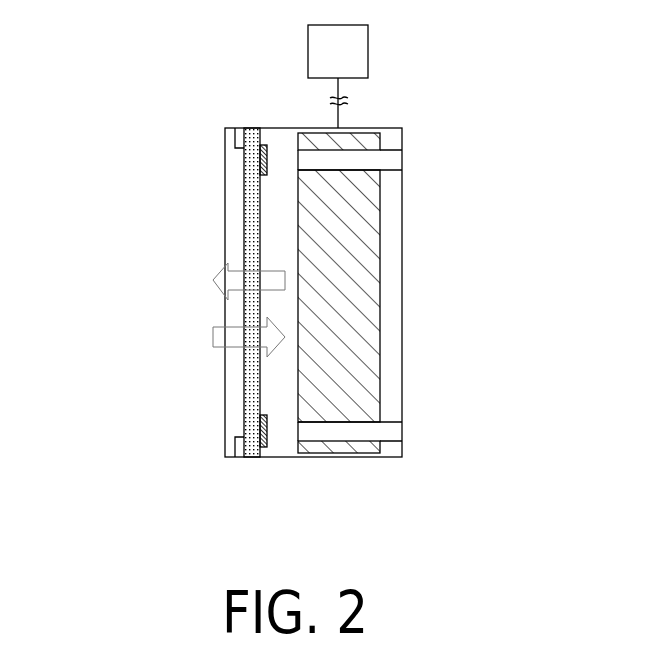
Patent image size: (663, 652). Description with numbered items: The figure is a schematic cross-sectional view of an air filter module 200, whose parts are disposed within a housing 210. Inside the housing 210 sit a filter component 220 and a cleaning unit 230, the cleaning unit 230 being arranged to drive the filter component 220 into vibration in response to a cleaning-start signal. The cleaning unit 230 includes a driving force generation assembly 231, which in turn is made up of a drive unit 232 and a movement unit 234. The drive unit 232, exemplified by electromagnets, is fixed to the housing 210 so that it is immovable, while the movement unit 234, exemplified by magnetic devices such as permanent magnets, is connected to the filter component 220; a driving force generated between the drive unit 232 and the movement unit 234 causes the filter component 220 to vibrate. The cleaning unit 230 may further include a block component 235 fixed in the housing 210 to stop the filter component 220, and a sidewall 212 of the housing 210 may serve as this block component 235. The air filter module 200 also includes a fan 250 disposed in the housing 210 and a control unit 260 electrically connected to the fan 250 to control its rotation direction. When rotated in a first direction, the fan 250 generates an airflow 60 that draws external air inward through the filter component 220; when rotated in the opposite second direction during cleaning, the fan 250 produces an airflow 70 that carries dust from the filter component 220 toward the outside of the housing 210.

The air filter module 200 is at (583, 470).
The housing 210 is at (270, 128).
The sidewall 212 is at (225, 157).
The filter component 220 is at (252, 201).
The cleaning unit 230 is at (88, 397).
The driving force generation assembly 231 is at (159, 462).
The drive unit 232 is at (347, 430).
The movement unit 234 is at (262, 447).
The block component 235 is at (240, 450).
The fan 250 is at (365, 248).
The control unit 260 is at (365, 48).
The airflow 60 is at (213, 337).
The airflow 70 is at (218, 275).